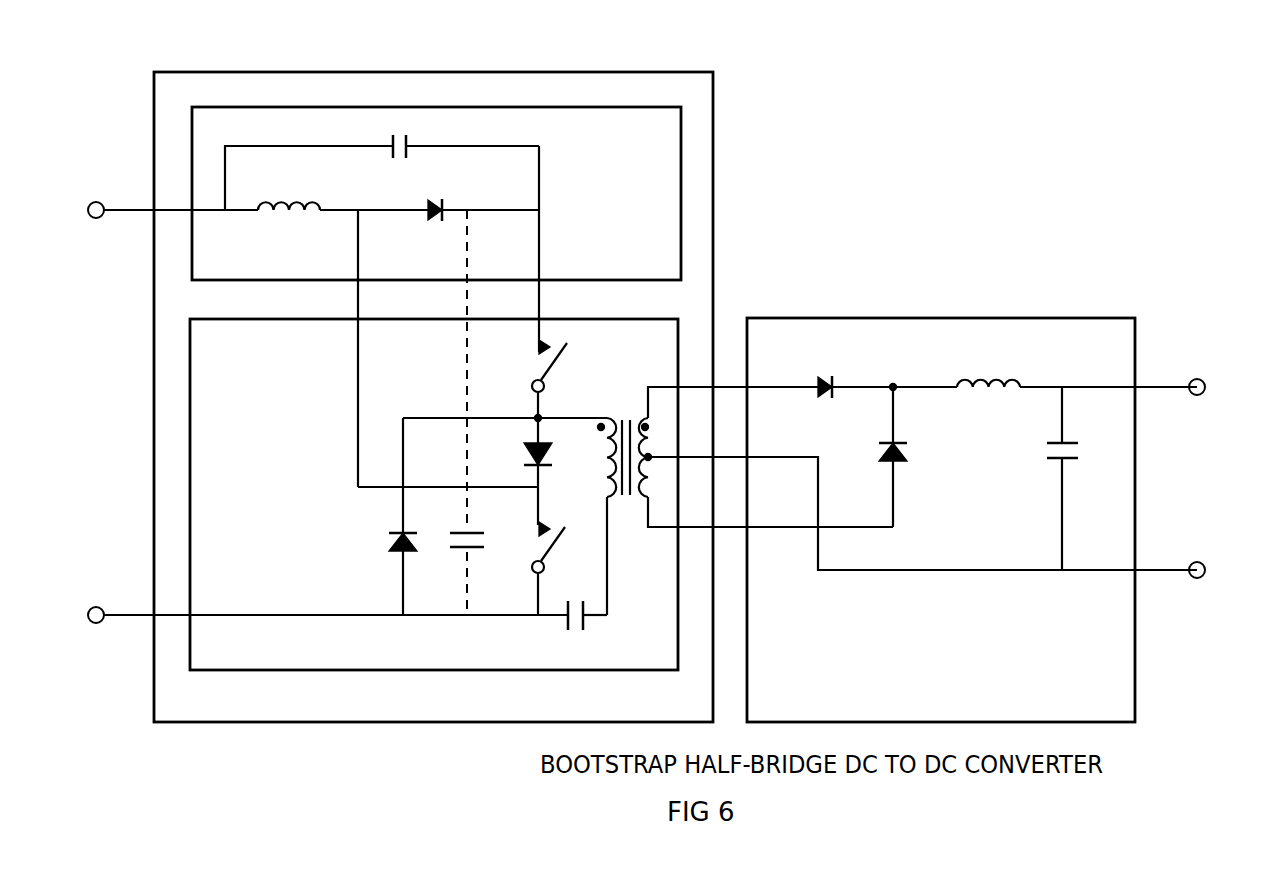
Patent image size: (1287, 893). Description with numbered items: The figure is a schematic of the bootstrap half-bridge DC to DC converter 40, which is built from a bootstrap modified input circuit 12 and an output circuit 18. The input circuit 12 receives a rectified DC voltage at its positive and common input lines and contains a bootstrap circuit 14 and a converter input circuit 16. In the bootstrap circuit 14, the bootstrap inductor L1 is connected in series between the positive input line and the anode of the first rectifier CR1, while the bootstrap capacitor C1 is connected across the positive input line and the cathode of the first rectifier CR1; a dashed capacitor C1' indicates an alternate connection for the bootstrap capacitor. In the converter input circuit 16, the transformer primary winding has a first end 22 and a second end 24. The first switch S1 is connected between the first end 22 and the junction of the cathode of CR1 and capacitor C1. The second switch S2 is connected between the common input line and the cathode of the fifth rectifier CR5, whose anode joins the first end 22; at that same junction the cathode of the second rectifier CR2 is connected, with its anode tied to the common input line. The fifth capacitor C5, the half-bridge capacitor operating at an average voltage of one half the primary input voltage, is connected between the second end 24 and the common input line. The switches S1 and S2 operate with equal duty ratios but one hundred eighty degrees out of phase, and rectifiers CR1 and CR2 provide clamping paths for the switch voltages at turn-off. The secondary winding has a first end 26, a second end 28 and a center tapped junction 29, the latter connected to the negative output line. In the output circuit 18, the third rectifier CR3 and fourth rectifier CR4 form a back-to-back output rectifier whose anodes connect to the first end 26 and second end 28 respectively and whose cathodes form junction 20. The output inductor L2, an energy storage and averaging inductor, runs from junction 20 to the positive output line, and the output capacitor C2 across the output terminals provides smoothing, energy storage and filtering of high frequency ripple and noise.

The bootstrap half-bridge DC to DC converter 40 is at (935, 135).
The bootstrap modified input circuit 12 is at (450, 399).
The bootstrap circuit 14 is at (436, 223).
The converter input circuit 16 is at (468, 440).
The output circuit 18 is at (1005, 522).
The cathode junction 20 is at (893, 381).
The first end of primary winding 22 is at (659, 489).
The second end of primary winding 24 is at (594, 464).
The first end of secondary winding 26 is at (693, 405).
The second end of secondary winding 28 is at (693, 513).
The center tapped junction 29 is at (652, 468).
The bootstrap inductor L1 is at (289, 226).
The output inductor L2 is at (988, 367).
The bootstrap capacitor C1 is at (382, 172).
The alternate bootstrap capacitor connection C1' is at (448, 412).
The output capacitor C2 is at (1041, 478).
The fifth capacitor C5 is at (581, 603).
The first rectifier CR1 is at (417, 229).
The second rectifier CR2 is at (373, 545).
The third rectifier CR3 is at (834, 368).
The fourth rectifier CR4 is at (872, 457).
The fifth rectifier CR5 is at (512, 471).
The first switch S1 is at (533, 379).
The second switch S2 is at (524, 568).